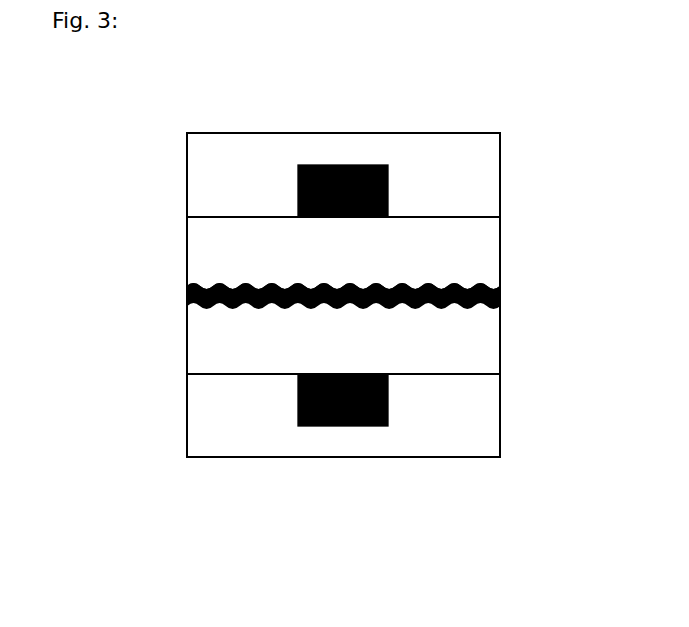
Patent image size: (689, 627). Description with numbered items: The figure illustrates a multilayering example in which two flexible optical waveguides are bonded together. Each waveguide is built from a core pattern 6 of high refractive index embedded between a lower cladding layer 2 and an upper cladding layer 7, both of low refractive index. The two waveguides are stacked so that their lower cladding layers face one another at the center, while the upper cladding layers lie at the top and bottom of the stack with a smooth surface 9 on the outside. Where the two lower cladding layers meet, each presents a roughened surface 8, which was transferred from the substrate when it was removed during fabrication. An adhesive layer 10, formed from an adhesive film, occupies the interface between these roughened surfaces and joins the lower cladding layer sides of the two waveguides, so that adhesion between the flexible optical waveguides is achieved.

The lower cladding layer 2 is at (452, 240).
The core pattern 6 is at (388, 185).
The upper cladding layer 7 is at (442, 148).
The roughened surface 8 is at (455, 287).
The smooth surface 9 is at (423, 133).
The adhesive layer 10 is at (277, 293).